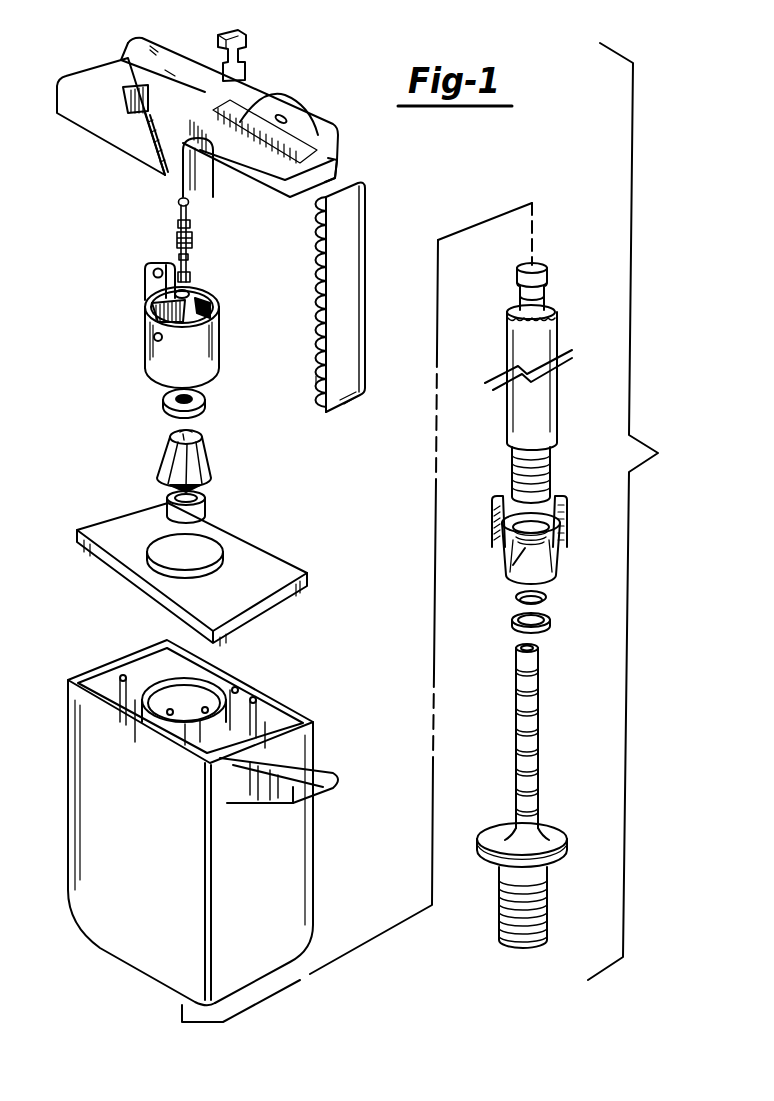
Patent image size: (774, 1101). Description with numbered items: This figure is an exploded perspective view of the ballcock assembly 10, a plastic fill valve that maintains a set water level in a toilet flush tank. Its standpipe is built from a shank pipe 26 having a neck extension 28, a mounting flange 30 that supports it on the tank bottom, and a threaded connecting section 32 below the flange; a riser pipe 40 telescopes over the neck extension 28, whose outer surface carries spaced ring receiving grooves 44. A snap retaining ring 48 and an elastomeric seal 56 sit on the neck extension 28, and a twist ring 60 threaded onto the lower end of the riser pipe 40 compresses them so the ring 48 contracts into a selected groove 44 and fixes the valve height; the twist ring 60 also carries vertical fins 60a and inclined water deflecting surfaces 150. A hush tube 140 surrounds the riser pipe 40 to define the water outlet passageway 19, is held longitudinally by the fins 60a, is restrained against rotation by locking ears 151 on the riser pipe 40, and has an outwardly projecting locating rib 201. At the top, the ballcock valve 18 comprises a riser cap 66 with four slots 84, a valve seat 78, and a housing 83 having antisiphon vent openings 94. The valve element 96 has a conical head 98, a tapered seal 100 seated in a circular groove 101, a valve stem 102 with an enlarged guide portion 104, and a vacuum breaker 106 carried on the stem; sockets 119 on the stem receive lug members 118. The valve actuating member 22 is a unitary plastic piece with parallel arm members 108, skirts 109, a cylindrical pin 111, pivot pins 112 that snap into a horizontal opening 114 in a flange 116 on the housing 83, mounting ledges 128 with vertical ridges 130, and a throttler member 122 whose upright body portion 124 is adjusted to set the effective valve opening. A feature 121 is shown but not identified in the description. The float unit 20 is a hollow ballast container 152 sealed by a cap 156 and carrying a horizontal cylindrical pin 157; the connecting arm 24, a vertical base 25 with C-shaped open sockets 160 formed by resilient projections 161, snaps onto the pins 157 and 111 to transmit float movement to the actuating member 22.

The ballcock assembly 10 is at (410, 205).
The ballcock valve 18 is at (157, 310).
The water outlet passageway 19 is at (557, 298).
The float unit 20 is at (231, 822).
The valve actuating member 22 is at (226, 125).
The connector arm 24 is at (348, 320).
The vertical base 25 is at (352, 312).
The shank pipe 26 is at (539, 796).
The neck extension 28 is at (538, 685).
The mounting flange 30 is at (547, 830).
The threaded connecting section 32 is at (540, 930).
The riser pipe 40 is at (553, 285).
The ring receiving grooves 44 is at (515, 685).
The snap retaining ring 48 is at (540, 597).
The elastomeric seal 56 is at (547, 630).
The twist ring 60 is at (536, 550).
The vertical fins 60a is at (492, 502).
The riser cap 66 is at (177, 461).
The valve seat 78 is at (207, 510).
The housing 83 is at (222, 363).
The slots 84 is at (213, 462).
The antisiphon vent openings 94 is at (222, 340).
The valve element 96 is at (197, 249).
The conical head 98 is at (215, 304).
The elastomeric seal 100 is at (193, 280).
The circular groove 101 is at (190, 266).
The valve stem 102 is at (191, 230).
The enlarged guide portion 104 is at (193, 244).
The vacuum breaker 106 is at (208, 407).
The arm members 108 is at (98, 80).
The skirts 109 is at (118, 160).
The cylindrical pin 111 is at (340, 165).
The pivot pins 112 is at (115, 110).
The horizontal opening 114 is at (164, 265).
The flange 116 is at (142, 278).
The lug members 118 is at (247, 82).
The sockets 119 is at (192, 221).
The top surface 121 is at (168, 50).
The throttler member 122 is at (272, 43).
The upright body portion 124 is at (189, 80).
The mounting ledges 128 is at (300, 102).
The vertical ridges 130 is at (281, 118).
The hush tube 140 is at (556, 369).
The inclined water deflecting surfaces 150 is at (513, 565).
The locking ears 151 is at (552, 453).
The ballast container 152 is at (298, 900).
The cap 156 is at (263, 560).
The horizontal cylindrical pin 157 is at (318, 790).
The open sockets 160 is at (313, 280).
The resilient projections 161 is at (313, 383).
The locating rib 201 is at (558, 328).